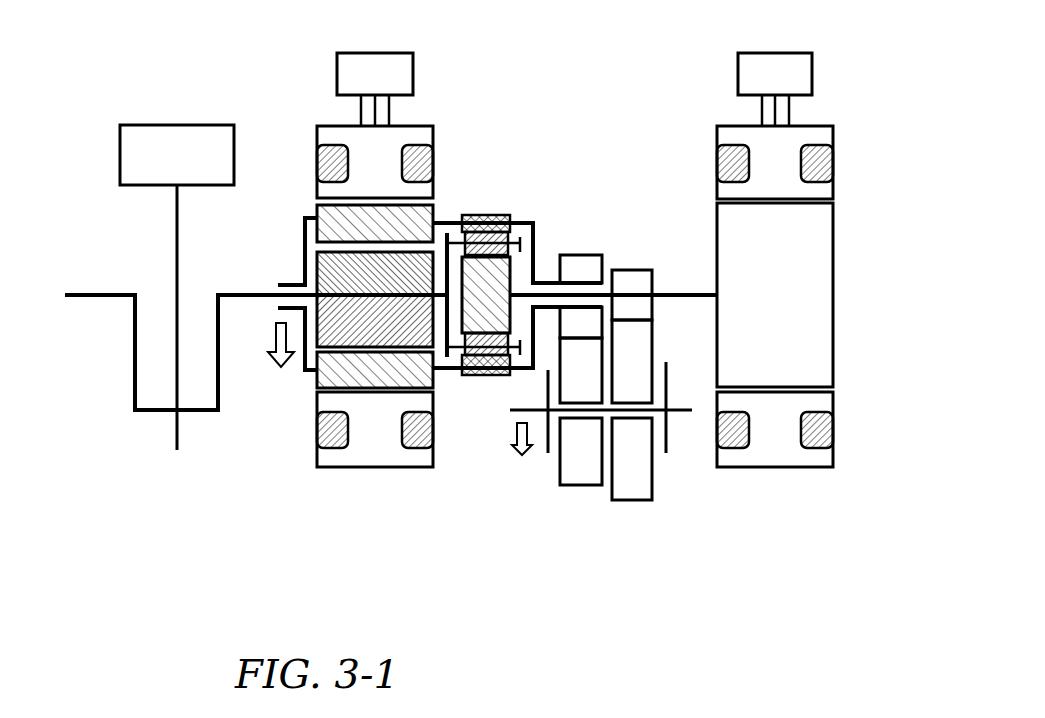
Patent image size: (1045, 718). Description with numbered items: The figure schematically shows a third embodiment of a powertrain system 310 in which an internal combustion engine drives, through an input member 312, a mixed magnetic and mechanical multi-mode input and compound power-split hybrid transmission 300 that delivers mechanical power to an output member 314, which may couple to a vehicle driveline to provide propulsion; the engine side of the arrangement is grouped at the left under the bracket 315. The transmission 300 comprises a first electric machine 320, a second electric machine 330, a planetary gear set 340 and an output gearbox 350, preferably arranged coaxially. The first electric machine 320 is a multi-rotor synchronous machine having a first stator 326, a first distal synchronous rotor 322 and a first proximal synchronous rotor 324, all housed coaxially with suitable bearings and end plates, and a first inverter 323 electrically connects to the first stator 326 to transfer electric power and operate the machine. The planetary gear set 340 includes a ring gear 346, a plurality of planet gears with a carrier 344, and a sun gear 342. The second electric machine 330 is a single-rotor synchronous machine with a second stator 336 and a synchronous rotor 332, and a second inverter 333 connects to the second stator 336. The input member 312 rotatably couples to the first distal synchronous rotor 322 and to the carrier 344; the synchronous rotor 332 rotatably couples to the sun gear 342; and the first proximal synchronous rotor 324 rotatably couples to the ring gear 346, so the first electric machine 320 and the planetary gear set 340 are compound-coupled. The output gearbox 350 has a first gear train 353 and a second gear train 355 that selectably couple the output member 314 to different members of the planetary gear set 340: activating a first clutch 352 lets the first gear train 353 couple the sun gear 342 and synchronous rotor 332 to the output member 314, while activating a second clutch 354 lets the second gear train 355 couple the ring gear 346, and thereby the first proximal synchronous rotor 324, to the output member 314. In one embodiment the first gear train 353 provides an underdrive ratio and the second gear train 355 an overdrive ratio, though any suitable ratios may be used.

The transmission 300 is at (690, 588).
The powertrain system 310 is at (119, 98).
The input member 312 is at (244, 295).
The output member 314 is at (275, 323).
The engine assembly 315 is at (110, 456).
The first electric machine 320 is at (335, 284).
The first distal synchronous rotor 322 is at (317, 265).
The first inverter 323 is at (337, 73).
The first proximal synchronous rotor 324 is at (317, 375).
The first stator 326 is at (317, 455).
The second electric machine 330 is at (803, 295).
The synchronous rotor 332 is at (833, 308).
The second inverter 333 is at (812, 73).
The second stator 336 is at (710, 476).
The planetary gear set 340 is at (523, 338).
The sun gear 342 is at (512, 265).
The carrier 344 is at (510, 232).
The ring gear 346 is at (490, 215).
The output gearbox 350 is at (607, 429).
The first clutch 352 is at (689, 456).
The first gear train 353 is at (608, 508).
The second clutch 354 is at (543, 467).
The second gear train 355 is at (603, 508).